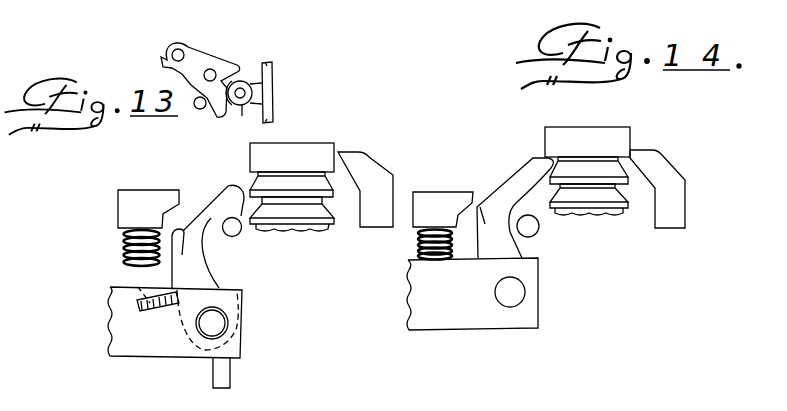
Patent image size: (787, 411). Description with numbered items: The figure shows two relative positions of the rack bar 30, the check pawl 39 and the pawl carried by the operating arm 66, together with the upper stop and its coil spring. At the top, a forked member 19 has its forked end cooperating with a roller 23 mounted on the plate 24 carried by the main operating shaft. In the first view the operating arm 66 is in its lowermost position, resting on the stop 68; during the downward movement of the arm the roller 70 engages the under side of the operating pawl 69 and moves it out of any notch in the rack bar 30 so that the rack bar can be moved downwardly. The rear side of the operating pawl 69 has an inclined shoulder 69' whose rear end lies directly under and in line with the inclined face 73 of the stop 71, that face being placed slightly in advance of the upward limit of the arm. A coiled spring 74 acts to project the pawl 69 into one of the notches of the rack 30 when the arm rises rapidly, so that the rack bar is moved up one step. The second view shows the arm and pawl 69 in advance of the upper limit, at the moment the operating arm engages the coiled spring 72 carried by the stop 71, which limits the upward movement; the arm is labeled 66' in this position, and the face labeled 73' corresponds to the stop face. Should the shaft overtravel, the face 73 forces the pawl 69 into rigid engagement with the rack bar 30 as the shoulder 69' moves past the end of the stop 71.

In FIG. 13, the forked member 19 is at (198, 67).
In FIG. 13, the roller 23 is at (238, 115).
In FIG. 13, the plate 24 is at (268, 83).
In FIG. 13, the rack bar 30 is at (298, 153).
In FIG. 14, the rack bar 30 is at (600, 135).
In FIG. 13, the check pawl 39 is at (358, 167).
In FIG. 14, the check pawl 39 is at (660, 170).
In FIG. 13, the operating arm 66 is at (150, 322).
In FIG. 14, the block 66' is at (472, 294).
In FIG. 13, the stop 68 is at (222, 375).
In FIG. 13, the operating pawl 69 is at (222, 236).
In FIG. 14, the operating pawl 69 is at (515, 196).
In FIG. 13, the inclined shoulder 69' is at (188, 258).
In FIG. 14, the inclined shoulder 69' is at (495, 234).
In FIG. 13, the roller 70 is at (242, 232).
In FIG. 14, the roller 70 is at (539, 230).
In FIG. 13, the stop 71 is at (145, 203).
In FIG. 14, the stop 71 is at (438, 205).
In FIG. 13, the coiled spring 72 is at (118, 244).
In FIG. 13, the inclined face 73 is at (199, 190).
In FIG. 13, the shoulder 73' is at (196, 172).
In FIG. 13, the coiled spring 74 is at (132, 284).